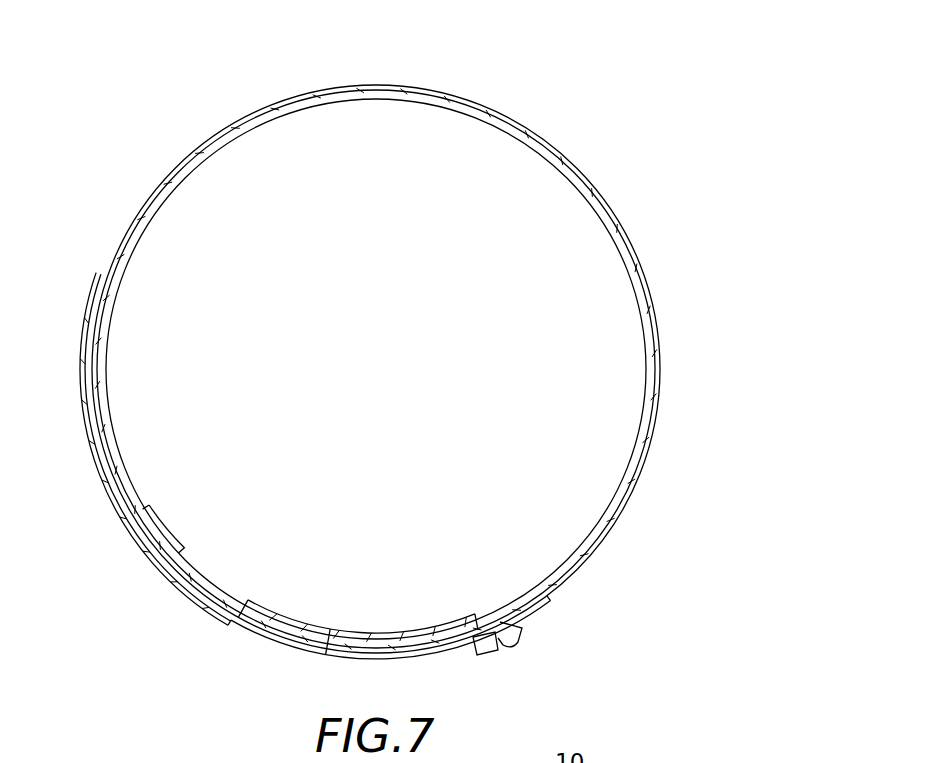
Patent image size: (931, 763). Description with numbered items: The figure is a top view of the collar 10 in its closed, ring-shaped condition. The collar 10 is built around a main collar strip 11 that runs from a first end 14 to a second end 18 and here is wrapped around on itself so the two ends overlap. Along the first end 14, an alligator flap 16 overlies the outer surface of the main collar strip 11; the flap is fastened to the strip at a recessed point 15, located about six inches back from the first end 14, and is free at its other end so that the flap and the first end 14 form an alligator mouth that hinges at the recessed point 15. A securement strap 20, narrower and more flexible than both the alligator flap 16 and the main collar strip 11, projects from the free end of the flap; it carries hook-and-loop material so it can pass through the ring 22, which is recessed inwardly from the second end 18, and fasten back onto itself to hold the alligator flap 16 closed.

The collar 10 is at (457, 83).
The main collar strip 11 is at (554, 142).
The first end 14 is at (160, 527).
The recessed point 15 is at (102, 274).
The alligator flap 16 is at (132, 528).
The second end 18 is at (103, 442).
The securement strap 20 is at (328, 660).
The ring 22 is at (500, 645).